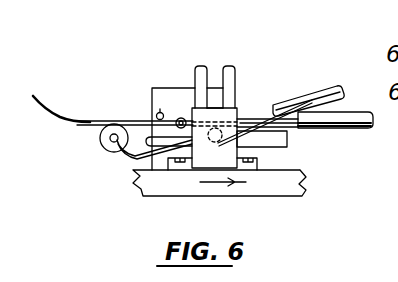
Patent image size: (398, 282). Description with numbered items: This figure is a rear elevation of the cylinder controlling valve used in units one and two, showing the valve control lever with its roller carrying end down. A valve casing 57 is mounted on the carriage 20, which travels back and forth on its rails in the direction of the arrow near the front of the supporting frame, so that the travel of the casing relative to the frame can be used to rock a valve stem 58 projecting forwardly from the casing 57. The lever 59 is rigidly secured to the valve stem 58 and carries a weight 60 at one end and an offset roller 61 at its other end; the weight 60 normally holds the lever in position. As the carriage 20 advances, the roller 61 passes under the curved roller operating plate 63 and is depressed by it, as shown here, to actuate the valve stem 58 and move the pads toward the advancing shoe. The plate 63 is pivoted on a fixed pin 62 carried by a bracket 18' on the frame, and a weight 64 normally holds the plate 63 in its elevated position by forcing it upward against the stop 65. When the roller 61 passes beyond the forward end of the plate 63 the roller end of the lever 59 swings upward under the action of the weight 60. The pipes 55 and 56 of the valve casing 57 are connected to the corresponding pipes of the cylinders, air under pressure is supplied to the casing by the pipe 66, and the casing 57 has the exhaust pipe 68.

The bracket 18' is at (160, 110).
The carriage 20 is at (141, 199).
The pipe 55 is at (233, 66).
The pipe 56 is at (203, 66).
The valve casing 57 is at (235, 107).
The valve stem 58 is at (211, 143).
The lever 59 is at (263, 112).
The weight 60 is at (322, 97).
The roller 61 is at (97, 148).
The fixed pin 62 is at (181, 117).
The plate 63 is at (95, 120).
The weight 64 is at (360, 104).
The stop 65 is at (156, 116).
The pipe 66 is at (126, 157).
The exhaust pipe 68 is at (287, 148).